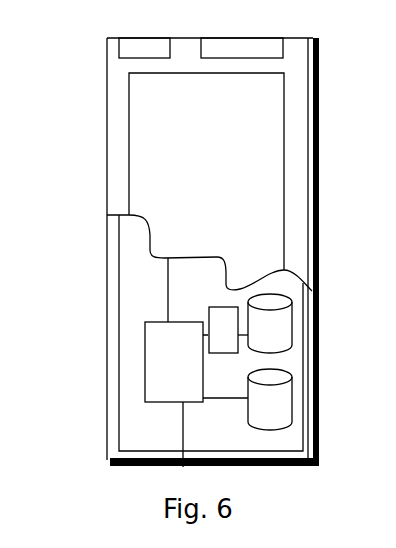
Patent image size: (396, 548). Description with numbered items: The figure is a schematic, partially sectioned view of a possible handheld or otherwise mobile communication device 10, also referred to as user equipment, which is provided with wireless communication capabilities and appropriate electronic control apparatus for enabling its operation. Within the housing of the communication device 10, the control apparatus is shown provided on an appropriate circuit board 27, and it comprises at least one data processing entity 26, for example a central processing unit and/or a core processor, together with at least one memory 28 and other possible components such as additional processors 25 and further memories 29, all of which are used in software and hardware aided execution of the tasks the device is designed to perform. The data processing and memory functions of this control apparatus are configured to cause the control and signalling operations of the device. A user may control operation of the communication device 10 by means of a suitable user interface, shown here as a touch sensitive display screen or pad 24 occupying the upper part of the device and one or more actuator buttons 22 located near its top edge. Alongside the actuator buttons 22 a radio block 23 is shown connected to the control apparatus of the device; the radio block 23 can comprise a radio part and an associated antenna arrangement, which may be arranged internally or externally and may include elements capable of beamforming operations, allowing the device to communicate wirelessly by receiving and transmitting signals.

The communication device 10 is at (118, 96).
The actuator buttons 22 is at (128, 39).
The radio block 23 is at (279, 46).
The touch sensitive display screen or pad 24 is at (157, 157).
The additional processors 25 is at (225, 322).
The data processing entity 26 is at (158, 354).
The circuit board 27 is at (157, 425).
The memory 28 is at (279, 340).
The memories 29 is at (279, 399).